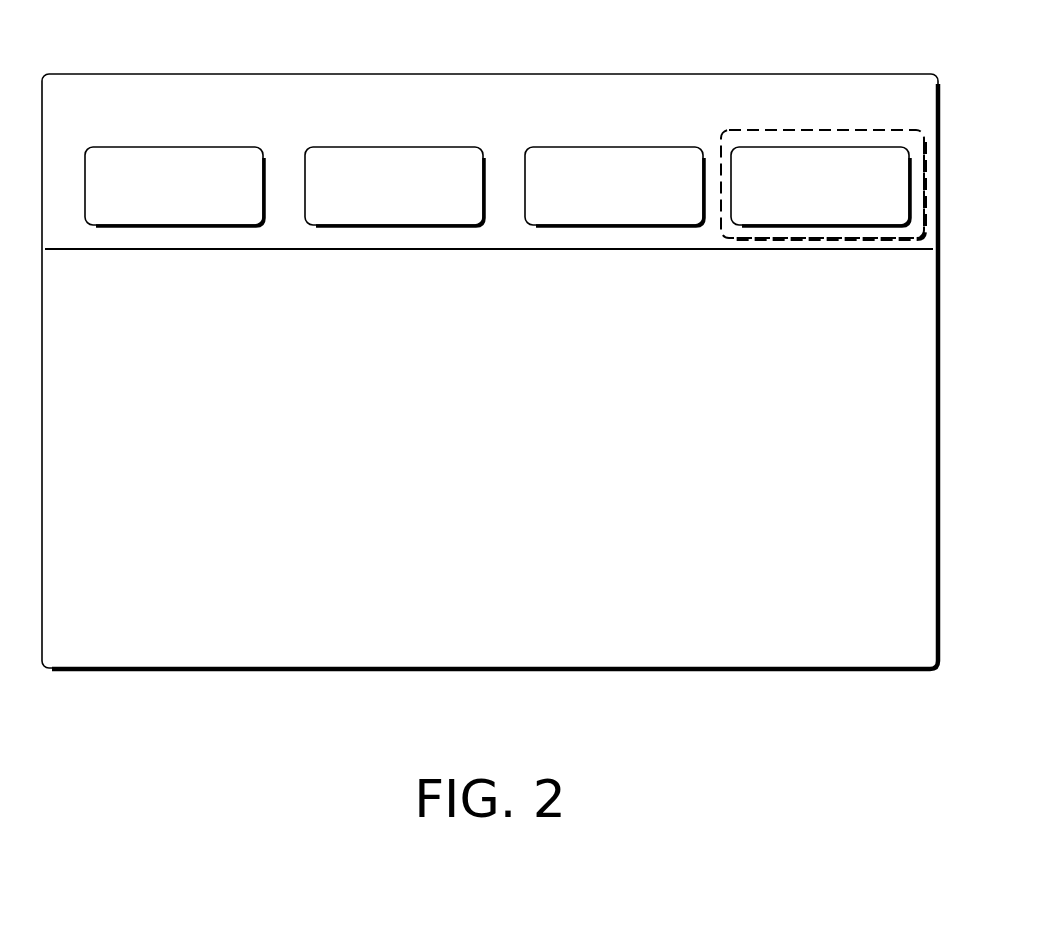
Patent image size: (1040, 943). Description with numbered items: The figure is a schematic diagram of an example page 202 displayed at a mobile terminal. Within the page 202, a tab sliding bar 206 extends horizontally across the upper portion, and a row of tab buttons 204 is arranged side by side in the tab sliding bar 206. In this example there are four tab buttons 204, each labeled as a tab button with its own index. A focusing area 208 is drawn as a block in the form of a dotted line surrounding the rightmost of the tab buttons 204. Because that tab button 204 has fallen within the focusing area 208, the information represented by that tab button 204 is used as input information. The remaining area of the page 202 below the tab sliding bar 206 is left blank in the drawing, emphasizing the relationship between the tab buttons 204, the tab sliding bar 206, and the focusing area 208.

The page 202 is at (711, 70).
The tab button 204 is at (497, 186).
The tab sliding bar 206 is at (836, 96).
The focusing area 208 is at (929, 154).